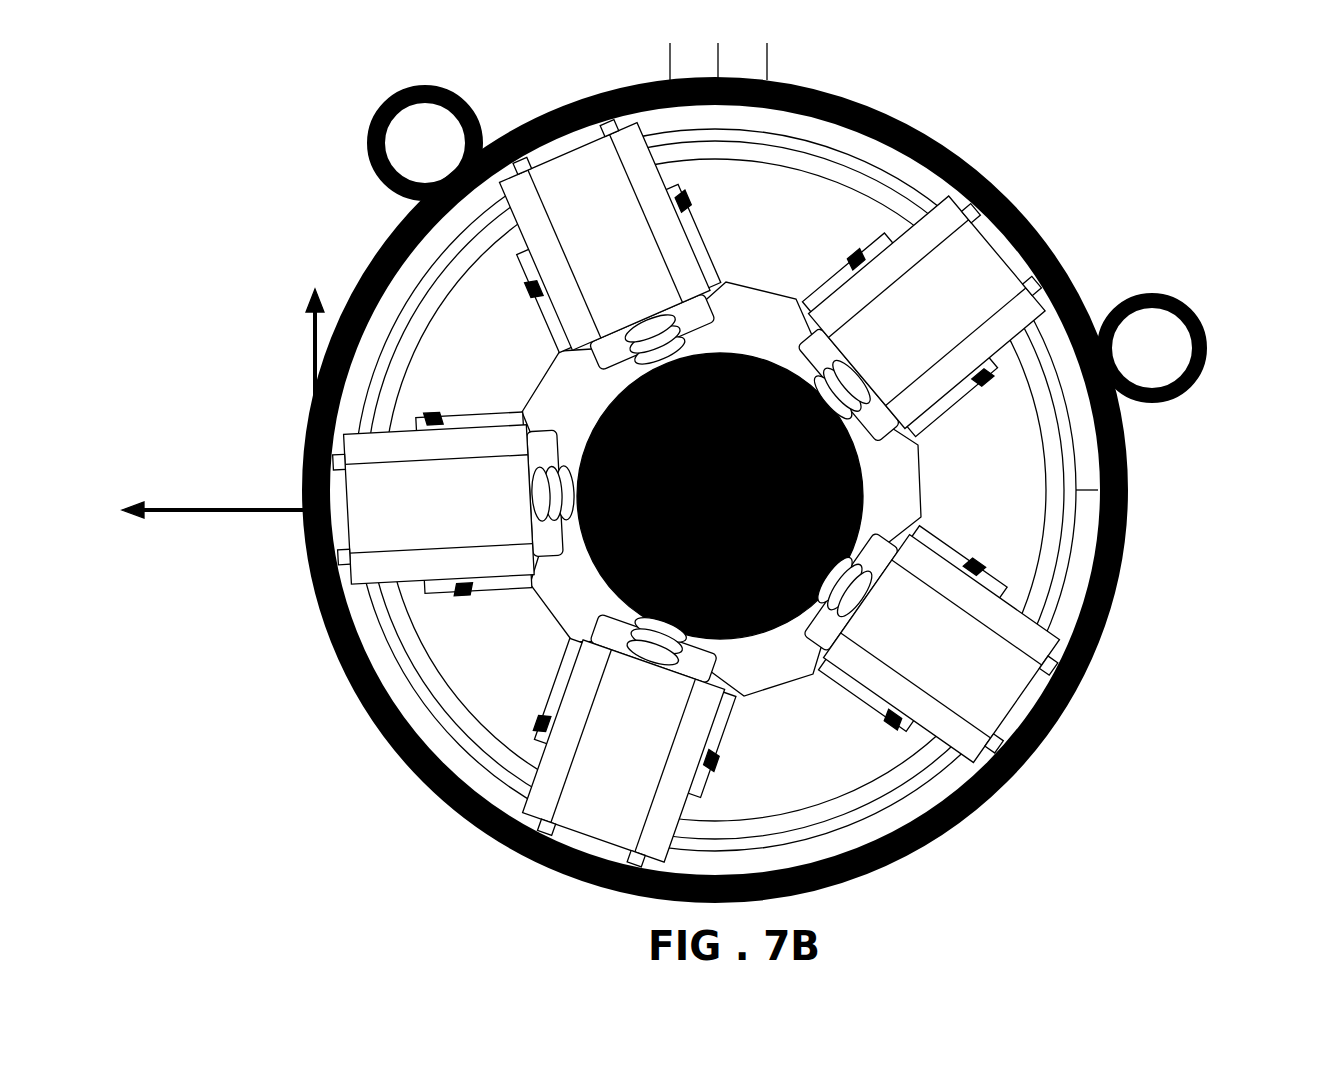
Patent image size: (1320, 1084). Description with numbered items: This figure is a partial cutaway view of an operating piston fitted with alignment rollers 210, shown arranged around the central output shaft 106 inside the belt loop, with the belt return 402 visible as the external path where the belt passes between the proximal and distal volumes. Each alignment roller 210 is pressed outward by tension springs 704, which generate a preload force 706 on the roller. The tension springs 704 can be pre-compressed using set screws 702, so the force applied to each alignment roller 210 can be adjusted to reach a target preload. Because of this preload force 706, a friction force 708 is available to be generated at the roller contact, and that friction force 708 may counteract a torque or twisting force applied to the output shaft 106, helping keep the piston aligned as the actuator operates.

The belt return 402 is at (410, 155).
The set screws 702 is at (1012, 262).
The tension springs 704 is at (860, 590).
The output shaft 106 is at (748, 531).
The friction force 708 is at (318, 357).
The preload force 706 is at (252, 512).
The alignment roller 210 is at (1010, 715).